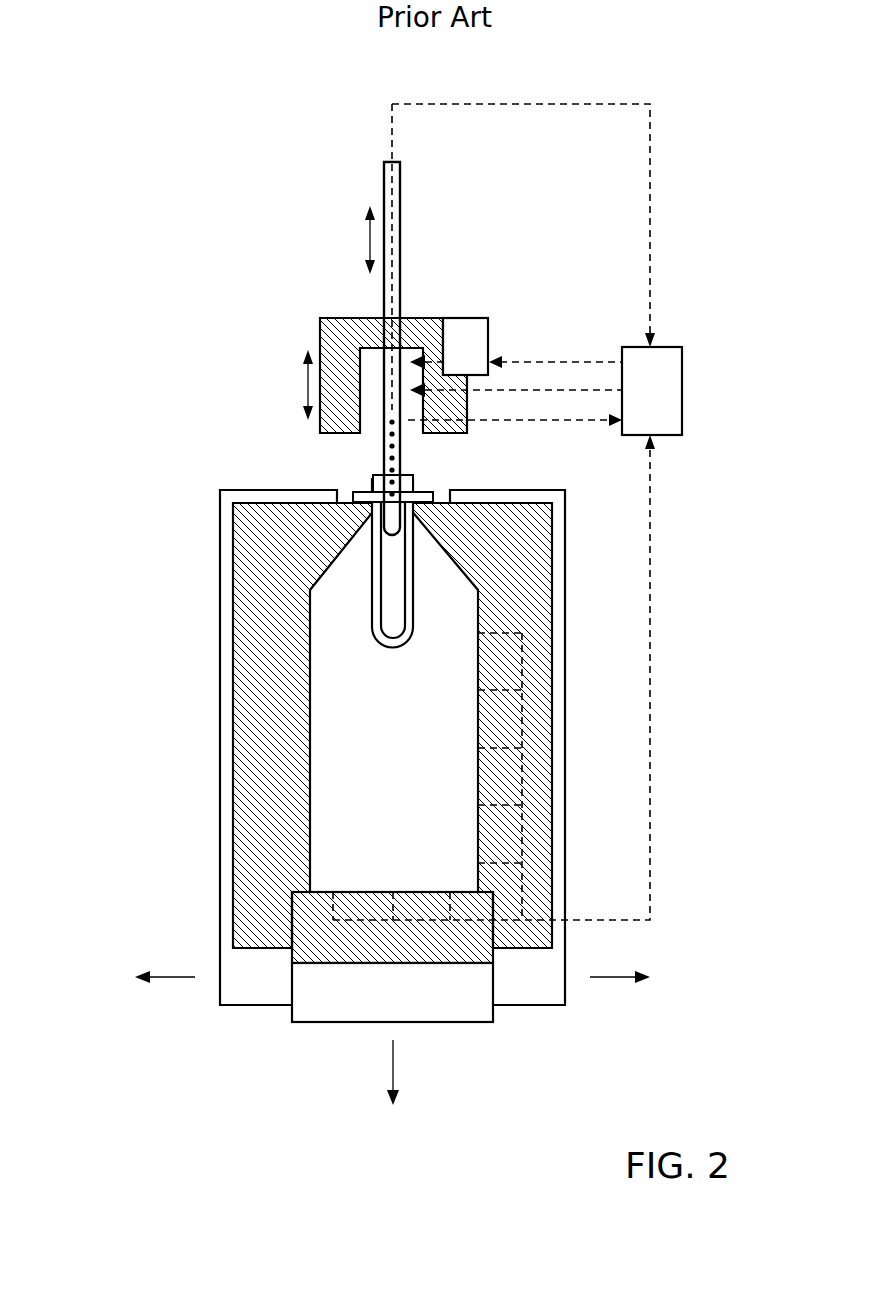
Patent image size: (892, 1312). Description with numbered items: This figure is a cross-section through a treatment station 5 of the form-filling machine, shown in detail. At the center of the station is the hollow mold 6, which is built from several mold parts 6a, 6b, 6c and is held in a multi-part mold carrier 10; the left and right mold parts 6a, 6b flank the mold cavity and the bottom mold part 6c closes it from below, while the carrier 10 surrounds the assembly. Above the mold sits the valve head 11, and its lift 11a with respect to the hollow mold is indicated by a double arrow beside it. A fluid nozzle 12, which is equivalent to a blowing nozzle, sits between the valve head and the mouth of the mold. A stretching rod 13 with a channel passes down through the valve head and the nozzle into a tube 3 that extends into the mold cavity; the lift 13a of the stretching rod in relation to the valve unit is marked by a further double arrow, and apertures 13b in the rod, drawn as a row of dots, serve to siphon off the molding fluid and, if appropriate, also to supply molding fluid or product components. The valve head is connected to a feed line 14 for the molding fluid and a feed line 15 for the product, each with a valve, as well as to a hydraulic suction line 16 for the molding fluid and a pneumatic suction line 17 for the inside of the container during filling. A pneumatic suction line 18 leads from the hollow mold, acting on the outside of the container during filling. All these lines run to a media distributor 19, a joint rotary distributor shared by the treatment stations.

The treatment station 5 is at (152, 289).
The tube / protective tube 3 is at (400, 649).
The hollow mold 6 is at (397, 794).
The mold part 6a is at (252, 879).
The mold part 6b is at (538, 865).
The mold part 6c is at (352, 943).
The multi-part mold carrier 10 is at (230, 538).
The valve head 11 is at (306, 333).
The lift of the valve unit 11a is at (305, 388).
The fluid nozzle 12 is at (360, 451).
The stretching rod 13 is at (402, 186).
The lift of the stretching rod 13a is at (366, 243).
The apertures 13b is at (401, 466).
The feed line for the molding fluid 14 is at (527, 360).
The feed line for the product 15 is at (600, 388).
The hydraulic suction line for the molding fluid 16 is at (652, 170).
The pneumatic suction line for the inside of the container 17 is at (578, 422).
The pneumatic suction line for the hollow mold 18 is at (652, 535).
The media distributor 19 is at (666, 404).